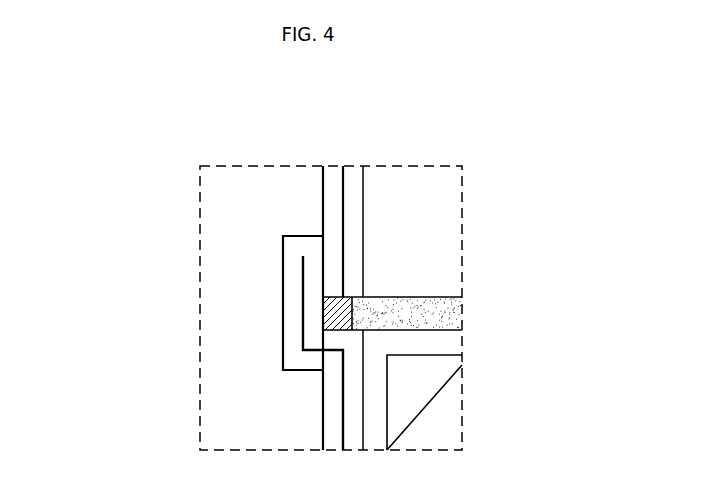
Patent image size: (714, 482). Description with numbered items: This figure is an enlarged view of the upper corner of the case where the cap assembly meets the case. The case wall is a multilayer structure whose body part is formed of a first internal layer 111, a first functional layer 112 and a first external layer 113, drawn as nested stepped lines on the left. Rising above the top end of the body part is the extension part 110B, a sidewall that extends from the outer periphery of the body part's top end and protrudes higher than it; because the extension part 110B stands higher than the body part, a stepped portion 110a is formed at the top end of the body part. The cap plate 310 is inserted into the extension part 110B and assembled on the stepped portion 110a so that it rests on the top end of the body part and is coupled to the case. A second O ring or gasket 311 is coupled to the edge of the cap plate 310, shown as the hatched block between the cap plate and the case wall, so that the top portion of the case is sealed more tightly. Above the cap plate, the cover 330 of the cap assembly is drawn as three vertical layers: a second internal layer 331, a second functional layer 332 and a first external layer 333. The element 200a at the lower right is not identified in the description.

The cover 330 is at (287, 100).
The second internal layer 331 is at (358, 207).
The second functional layer 332 is at (343, 185).
The first external layer 333 is at (328, 195).
The extension part 110B is at (115, 257).
The first internal layer 111 is at (318, 260).
The first functional layer 112 is at (302, 295).
The first external layer 113 is at (292, 330).
The stepped portion 110a is at (328, 327).
The cap plate 310 is at (445, 308).
The gasket 311 is at (345, 320).
The sealing member 200a is at (450, 404).